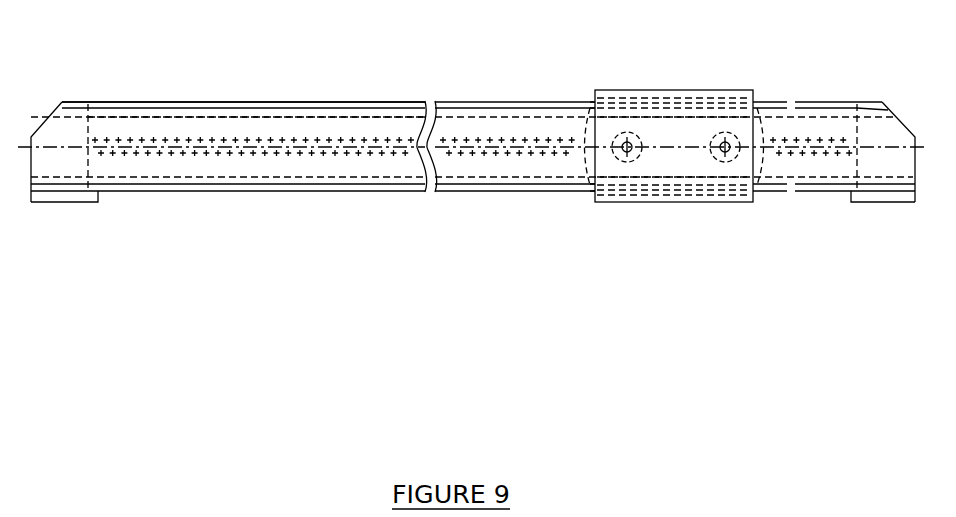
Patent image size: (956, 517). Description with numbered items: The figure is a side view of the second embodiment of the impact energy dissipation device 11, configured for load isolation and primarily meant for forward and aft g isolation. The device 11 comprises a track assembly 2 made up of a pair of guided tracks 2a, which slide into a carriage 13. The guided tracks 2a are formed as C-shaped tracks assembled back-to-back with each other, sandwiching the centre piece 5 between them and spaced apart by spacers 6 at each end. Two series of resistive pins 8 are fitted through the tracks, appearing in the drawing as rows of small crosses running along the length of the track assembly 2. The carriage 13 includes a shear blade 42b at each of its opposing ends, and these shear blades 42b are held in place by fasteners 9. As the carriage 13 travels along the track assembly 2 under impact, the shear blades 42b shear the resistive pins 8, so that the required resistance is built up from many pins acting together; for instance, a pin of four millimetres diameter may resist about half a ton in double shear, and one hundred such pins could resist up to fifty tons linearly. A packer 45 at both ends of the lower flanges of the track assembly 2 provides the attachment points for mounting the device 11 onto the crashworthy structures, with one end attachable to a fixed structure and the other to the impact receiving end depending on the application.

The track assembly 2 is at (343, 194).
The guided tracks 2a is at (153, 102).
The centre piece 5 is at (220, 117).
The spacers 6 is at (88, 128).
The resistive pins 8 is at (530, 138).
The fasteners 9 is at (633, 152).
The impact energy dissipation device 11 is at (650, 69).
The carriage 13 is at (736, 94).
The shear blade 42b is at (588, 117).
The packer 45 is at (98, 201).